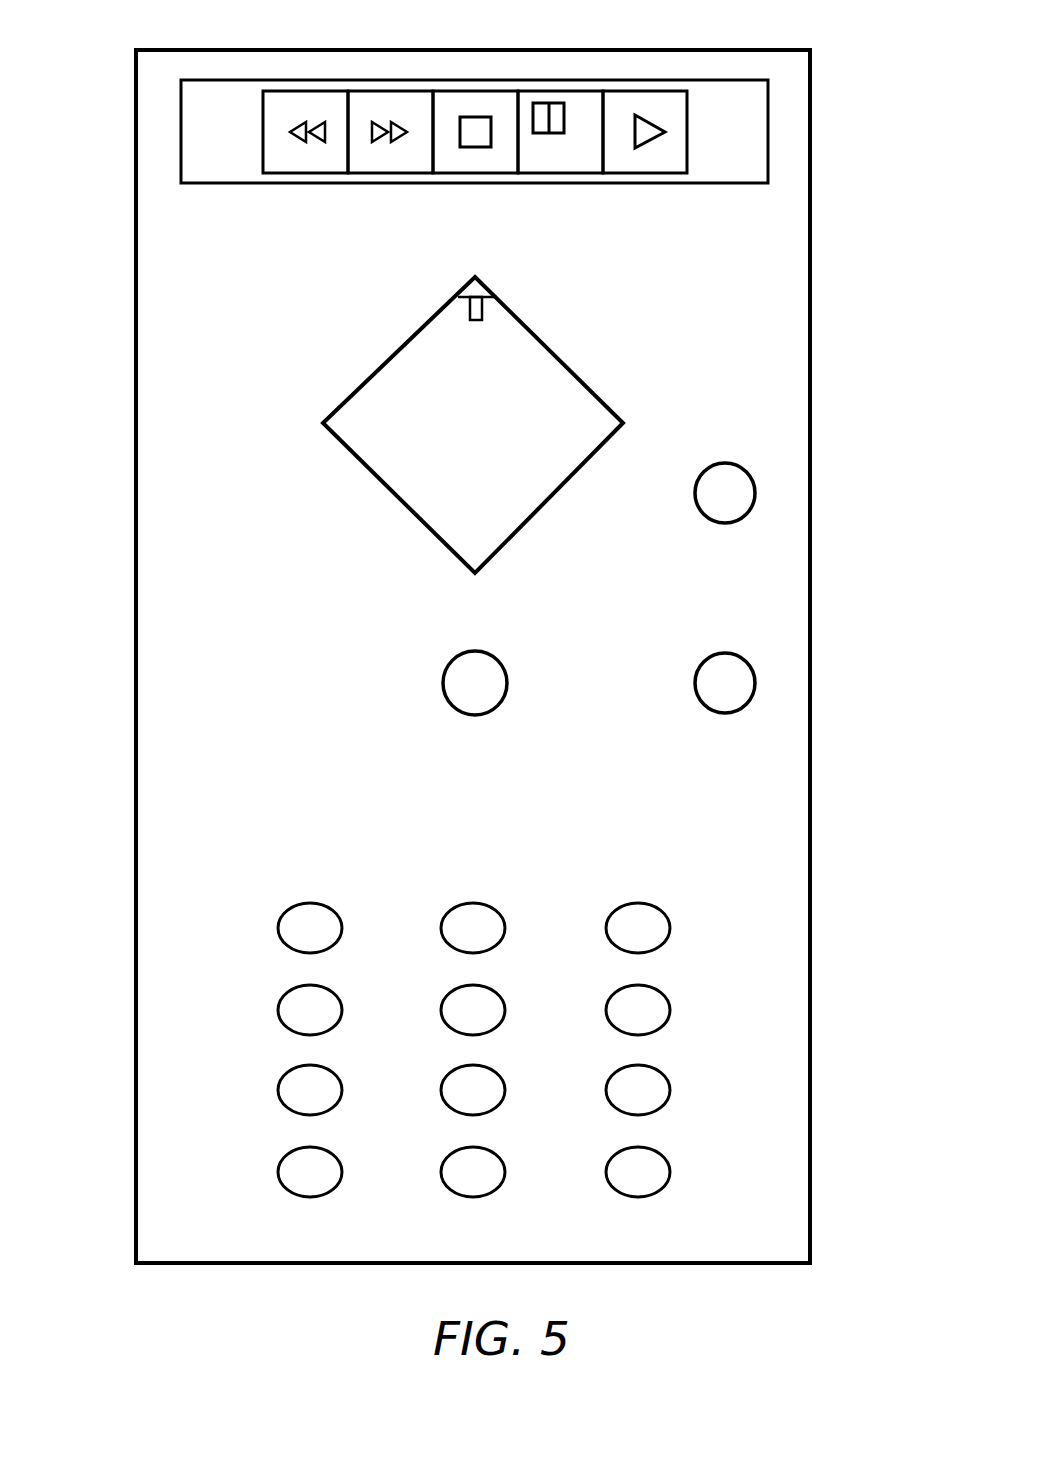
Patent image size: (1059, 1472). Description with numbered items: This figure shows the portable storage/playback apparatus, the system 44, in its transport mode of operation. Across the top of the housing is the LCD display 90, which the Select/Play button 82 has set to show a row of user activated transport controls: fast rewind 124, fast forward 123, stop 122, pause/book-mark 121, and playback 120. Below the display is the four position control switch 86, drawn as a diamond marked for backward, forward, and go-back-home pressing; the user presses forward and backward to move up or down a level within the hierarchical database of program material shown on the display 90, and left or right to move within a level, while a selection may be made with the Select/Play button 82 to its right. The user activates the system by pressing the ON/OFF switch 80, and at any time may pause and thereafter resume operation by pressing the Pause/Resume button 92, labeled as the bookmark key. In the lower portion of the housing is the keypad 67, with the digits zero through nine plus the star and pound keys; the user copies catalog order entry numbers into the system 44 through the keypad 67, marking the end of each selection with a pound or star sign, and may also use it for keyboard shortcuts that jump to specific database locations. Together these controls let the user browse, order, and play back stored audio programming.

The system 44 is at (118, 1079).
The LCD display 90 is at (195, 133).
The fast rewind control 124 is at (292, 100).
The fast forward control 123 is at (378, 103).
The stop control 122 is at (467, 100).
The pause/book-mark control 121 is at (565, 100).
The playback control 120 is at (650, 100).
The four position control switch 86 is at (422, 353).
The Select/Play button 82 is at (722, 477).
The ON/OFF switch 80 is at (718, 672).
The Pause/Resume button 92 is at (458, 688).
The keypad 67 is at (692, 1073).